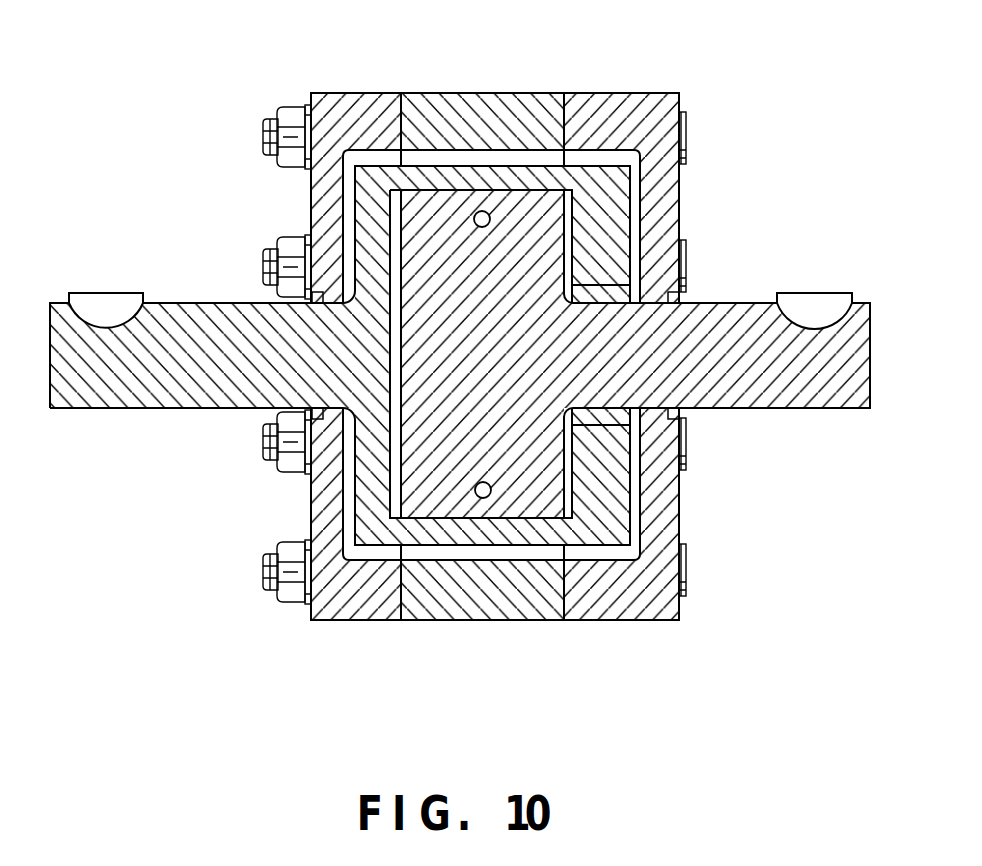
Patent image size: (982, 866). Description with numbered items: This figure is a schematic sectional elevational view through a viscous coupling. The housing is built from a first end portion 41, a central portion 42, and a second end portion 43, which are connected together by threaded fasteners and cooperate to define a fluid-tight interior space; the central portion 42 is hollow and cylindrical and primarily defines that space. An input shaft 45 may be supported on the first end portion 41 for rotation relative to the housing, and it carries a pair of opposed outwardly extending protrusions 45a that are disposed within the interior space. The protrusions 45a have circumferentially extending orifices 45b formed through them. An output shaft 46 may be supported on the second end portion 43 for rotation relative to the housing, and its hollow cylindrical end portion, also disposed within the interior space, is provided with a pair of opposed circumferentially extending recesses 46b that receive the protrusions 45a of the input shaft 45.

The first end portion 41 is at (653, 607).
The central portion 42 is at (480, 620).
The second end portion 43 is at (332, 607).
The input shaft 45 is at (635, 357).
The outwardly extending protrusion 45a is at (522, 207).
The circumferentially extending orifice 45b is at (475, 213).
The output shaft 46 is at (340, 355).
The circumferentially extending recess 46b is at (426, 193).